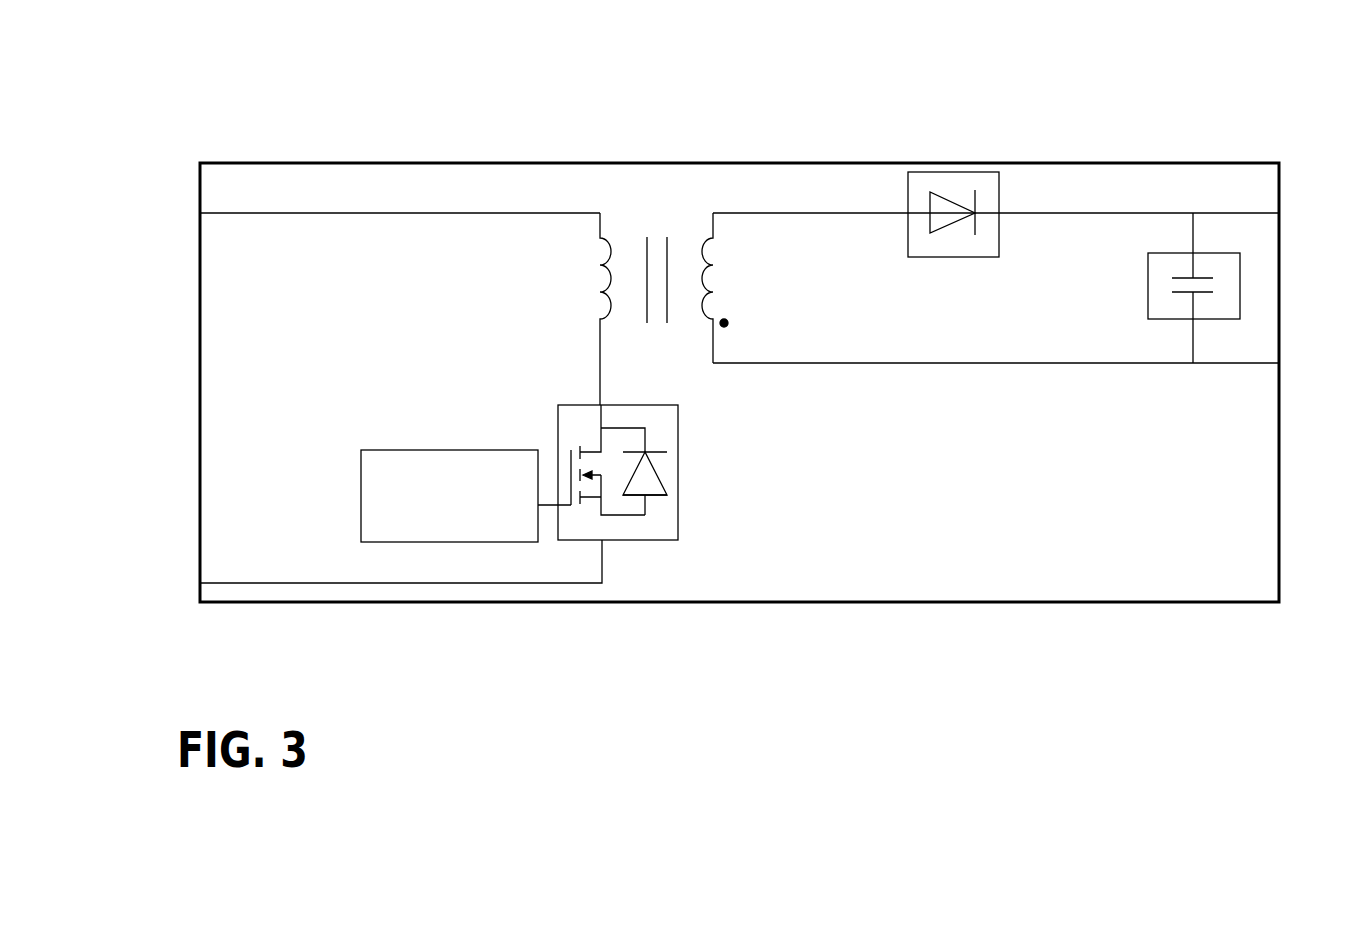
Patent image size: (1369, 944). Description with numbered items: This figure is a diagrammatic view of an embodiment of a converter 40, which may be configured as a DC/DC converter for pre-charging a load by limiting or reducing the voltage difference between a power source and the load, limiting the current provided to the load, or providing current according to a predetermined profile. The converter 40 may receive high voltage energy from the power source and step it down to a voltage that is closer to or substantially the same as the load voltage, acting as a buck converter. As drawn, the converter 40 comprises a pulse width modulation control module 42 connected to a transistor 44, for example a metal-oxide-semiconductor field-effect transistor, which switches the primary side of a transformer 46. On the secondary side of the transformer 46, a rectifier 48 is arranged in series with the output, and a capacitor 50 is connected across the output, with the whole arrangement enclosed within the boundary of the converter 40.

The converter 40 is at (785, 118).
The pulse width modulation (PWM) control module 42 is at (408, 450).
The transistor 44 is at (678, 492).
The transformer 46 is at (655, 193).
The rectifier 48 is at (948, 257).
The capacitor 50 is at (1148, 268).